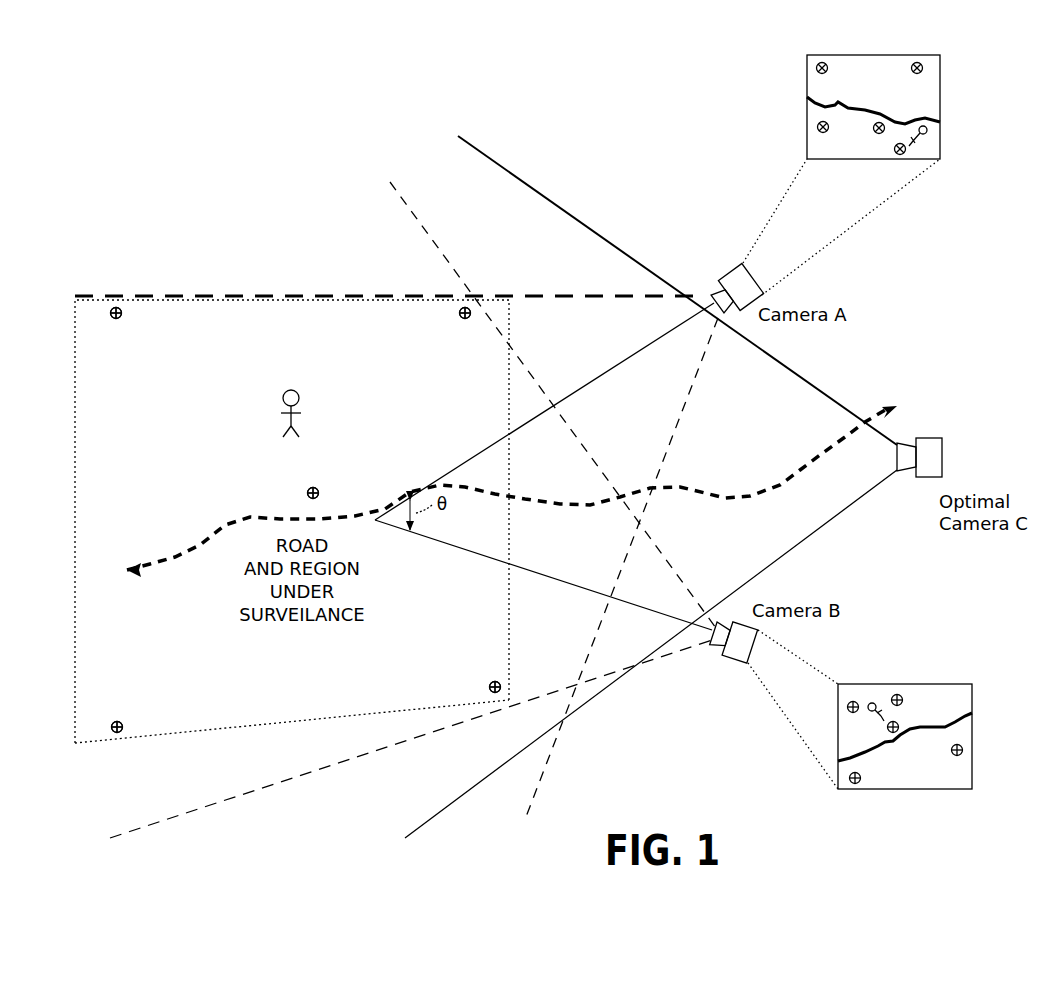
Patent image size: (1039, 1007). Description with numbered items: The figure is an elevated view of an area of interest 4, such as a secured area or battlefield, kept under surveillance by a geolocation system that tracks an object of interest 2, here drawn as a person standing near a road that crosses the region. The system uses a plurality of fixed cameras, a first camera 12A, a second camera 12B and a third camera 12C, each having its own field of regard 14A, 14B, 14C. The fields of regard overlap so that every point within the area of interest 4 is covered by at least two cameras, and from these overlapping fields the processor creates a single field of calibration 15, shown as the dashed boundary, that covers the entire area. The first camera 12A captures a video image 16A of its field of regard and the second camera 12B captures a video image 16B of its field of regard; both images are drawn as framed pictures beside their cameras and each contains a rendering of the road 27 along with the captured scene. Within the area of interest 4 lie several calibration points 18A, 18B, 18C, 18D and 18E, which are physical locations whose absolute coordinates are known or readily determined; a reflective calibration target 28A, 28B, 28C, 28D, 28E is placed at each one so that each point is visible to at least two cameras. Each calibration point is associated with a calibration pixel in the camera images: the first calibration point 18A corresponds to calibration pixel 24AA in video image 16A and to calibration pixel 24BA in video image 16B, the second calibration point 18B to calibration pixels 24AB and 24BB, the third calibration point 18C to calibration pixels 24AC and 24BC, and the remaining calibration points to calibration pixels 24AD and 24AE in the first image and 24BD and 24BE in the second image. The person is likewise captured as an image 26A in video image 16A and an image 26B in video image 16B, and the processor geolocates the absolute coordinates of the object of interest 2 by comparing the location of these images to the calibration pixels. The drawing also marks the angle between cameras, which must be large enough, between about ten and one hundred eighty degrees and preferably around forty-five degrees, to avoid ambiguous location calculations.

The object of interest 2 is at (296, 415).
The area of interest 4 is at (279, 724).
The first camera 12A is at (727, 270).
The second camera 12B is at (733, 662).
The third camera 12C is at (928, 437).
The field of regard of first camera 14A is at (523, 293).
The field of regard of second camera 14B is at (476, 722).
The field of regard of third camera 14C is at (849, 510).
The field of calibration 15 is at (258, 294).
The video image of first camera 16A is at (941, 101).
The video image of second camera 16B is at (955, 791).
The first calibration point 18A is at (138, 317).
The second calibration point 18B is at (456, 322).
The third calibration point 18C is at (486, 688).
The calibration point 18D is at (137, 718).
The calibration point 18E is at (303, 489).
The calibration pixel 24AA is at (907, 151).
The calibration pixel 24AB is at (818, 129).
The calibration pixel 24AC is at (816, 68).
The calibration pixel 24AD is at (922, 66).
The calibration pixel 24AE is at (877, 134).
The calibration pixel 24BA is at (851, 700).
The calibration pixel 24BB is at (899, 693).
The calibration pixel 24BC is at (962, 745).
The calibration pixel 24BD is at (859, 783).
The calibration pixel 24BE is at (886, 728).
The image of object of interest in first video image 26A is at (928, 132).
The image of object of interest in second video image 26B is at (873, 702).
The road image 27 is at (853, 107).
The first calibration target 28A is at (118, 321).
The second calibration target 28B is at (458, 316).
The calibration target 28C is at (496, 680).
The calibration target 28D is at (118, 720).
The calibration target 28E is at (319, 490).